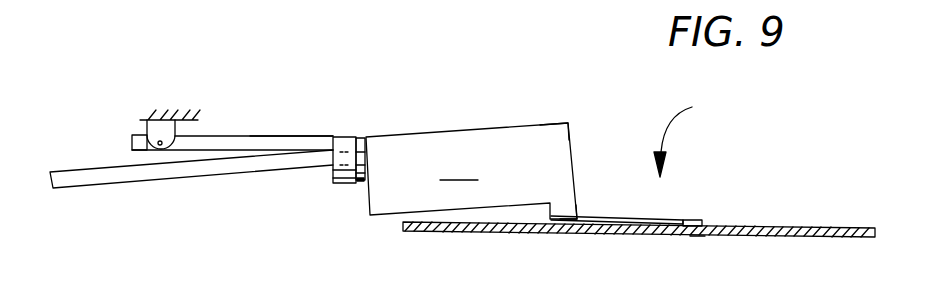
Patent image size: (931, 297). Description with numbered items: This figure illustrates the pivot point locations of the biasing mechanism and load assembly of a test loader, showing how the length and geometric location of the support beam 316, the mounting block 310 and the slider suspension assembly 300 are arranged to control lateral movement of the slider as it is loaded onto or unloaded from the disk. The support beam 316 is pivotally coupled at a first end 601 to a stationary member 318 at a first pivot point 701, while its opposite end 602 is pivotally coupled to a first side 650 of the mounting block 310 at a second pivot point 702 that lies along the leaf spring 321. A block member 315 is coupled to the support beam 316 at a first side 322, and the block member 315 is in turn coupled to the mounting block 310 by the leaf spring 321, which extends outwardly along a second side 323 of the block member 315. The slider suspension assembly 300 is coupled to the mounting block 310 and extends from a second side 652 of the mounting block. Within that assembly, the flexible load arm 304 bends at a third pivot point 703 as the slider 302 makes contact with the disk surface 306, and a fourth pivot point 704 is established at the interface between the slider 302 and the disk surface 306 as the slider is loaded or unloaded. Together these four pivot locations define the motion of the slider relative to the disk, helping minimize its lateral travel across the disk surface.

The slider suspension assembly 300 is at (697, 135).
The slider 302 is at (704, 224).
The flexible load arm 304 is at (601, 217).
The disk surface 306 is at (823, 227).
The mounting block 310 is at (471, 171).
The block member 315 is at (331, 172).
The support beam 316 is at (236, 135).
The stationary member 318 is at (168, 108).
The leaf spring 321 is at (356, 186).
The first side 322 is at (338, 137).
The second side 323 is at (335, 179).
The first end 601 is at (144, 134).
The opposite end 602 is at (296, 135).
The first side 650 is at (360, 137).
The second side 652 is at (573, 132).
The first pivot point 701 is at (132, 143).
The second pivot point 702 is at (361, 183).
The third pivot point 703 is at (577, 222).
The fourth pivot point 704 is at (697, 233).